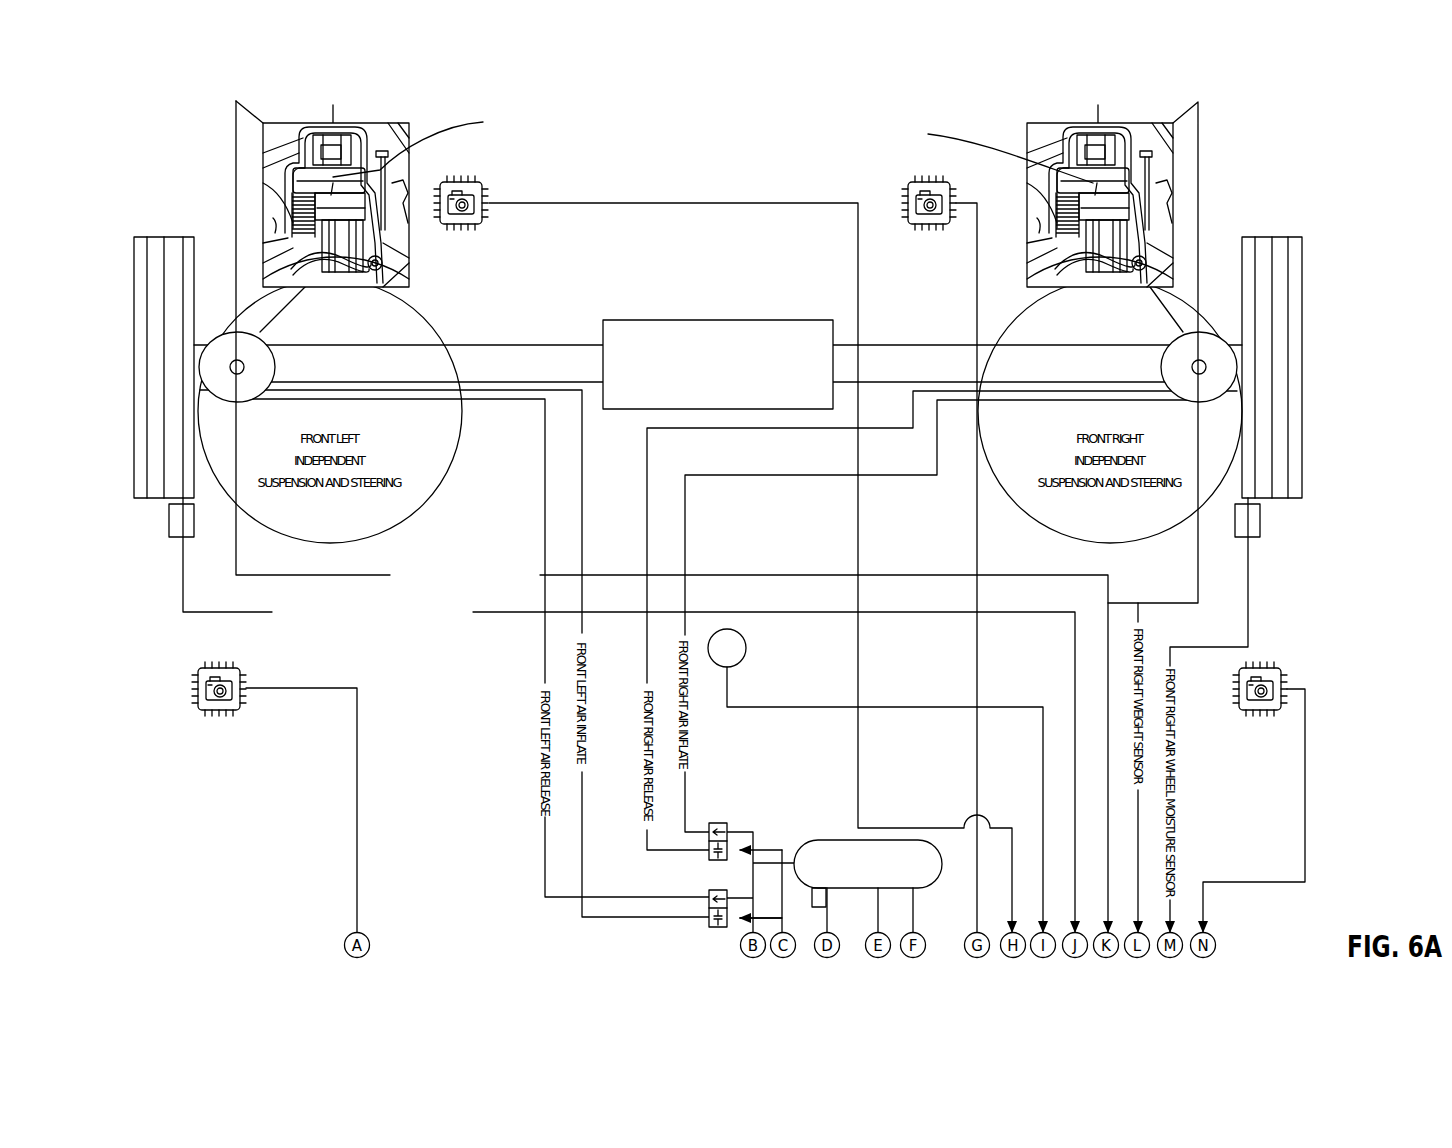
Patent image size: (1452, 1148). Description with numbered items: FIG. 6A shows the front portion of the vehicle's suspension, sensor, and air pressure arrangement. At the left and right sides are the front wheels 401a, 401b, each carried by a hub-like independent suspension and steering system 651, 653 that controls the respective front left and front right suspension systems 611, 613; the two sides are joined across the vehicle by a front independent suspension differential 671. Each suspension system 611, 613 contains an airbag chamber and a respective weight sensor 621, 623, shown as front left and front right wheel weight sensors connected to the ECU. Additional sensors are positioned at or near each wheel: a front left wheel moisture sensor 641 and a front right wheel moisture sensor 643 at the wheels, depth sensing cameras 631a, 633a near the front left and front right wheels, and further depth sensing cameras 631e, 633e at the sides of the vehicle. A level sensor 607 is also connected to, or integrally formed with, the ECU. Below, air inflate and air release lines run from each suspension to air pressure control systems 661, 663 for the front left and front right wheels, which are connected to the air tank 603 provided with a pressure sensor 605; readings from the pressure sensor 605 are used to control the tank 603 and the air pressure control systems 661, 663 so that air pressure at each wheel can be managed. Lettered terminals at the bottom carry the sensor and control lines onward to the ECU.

The front left wheel 401a is at (173, 237).
The front right wheel 401b is at (1278, 237).
The air tank 603 is at (838, 840).
The pressure sensor 605 is at (826, 897).
The level sensor 607 is at (727, 629).
The suspension system 611 is at (383, 122).
The suspension system 613 is at (1038, 122).
The front left wheel weight sensor 621 is at (333, 82).
The front right wheel weight sensor 623 is at (1098, 82).
The depth sensing camera 631a is at (489, 192).
The left side depth sensing camera 631e is at (218, 662).
The depth sensing camera 633a is at (902, 192).
The right side depth sensing camera 633e is at (1282, 662).
The front left wheel moisture sensor 641 is at (169, 520).
The front right wheel moisture sensor 643 is at (1260, 520).
The independent suspension and steering system 651 is at (231, 343).
The independent suspension and steering system 653 is at (1207, 344).
The air pressure control system 661 is at (707, 895).
The air pressure control system 663 is at (718, 823).
The front independent suspension differential 671 is at (716, 318).